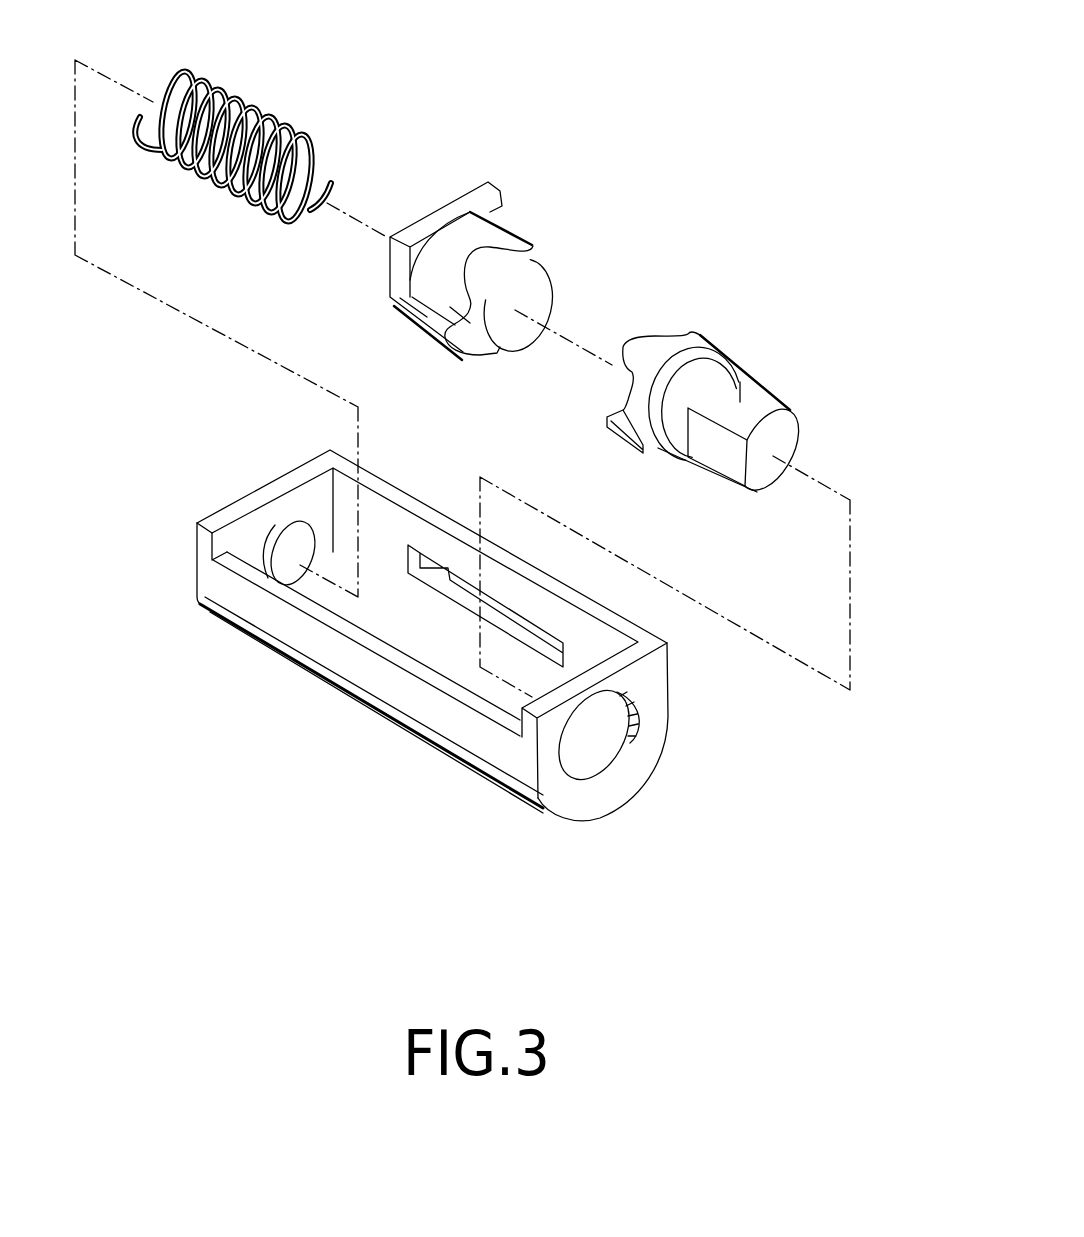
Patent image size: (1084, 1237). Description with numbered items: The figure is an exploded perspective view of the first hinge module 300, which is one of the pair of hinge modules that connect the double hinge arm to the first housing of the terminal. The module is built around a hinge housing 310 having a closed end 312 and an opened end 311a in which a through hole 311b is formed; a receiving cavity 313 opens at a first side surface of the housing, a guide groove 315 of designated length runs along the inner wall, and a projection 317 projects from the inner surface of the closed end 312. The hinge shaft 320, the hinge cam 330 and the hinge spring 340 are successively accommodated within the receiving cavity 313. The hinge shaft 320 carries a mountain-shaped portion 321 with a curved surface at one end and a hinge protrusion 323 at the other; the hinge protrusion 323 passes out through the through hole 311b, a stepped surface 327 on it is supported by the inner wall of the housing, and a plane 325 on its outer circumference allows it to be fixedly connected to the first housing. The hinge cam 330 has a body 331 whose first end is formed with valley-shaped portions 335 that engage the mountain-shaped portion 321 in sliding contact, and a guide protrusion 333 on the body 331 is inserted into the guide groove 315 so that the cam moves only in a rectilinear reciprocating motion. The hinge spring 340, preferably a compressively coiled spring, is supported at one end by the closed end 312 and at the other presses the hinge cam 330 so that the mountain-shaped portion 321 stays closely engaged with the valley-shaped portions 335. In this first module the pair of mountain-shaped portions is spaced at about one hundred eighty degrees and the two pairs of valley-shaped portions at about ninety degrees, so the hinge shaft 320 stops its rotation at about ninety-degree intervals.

The first hinge module 300 is at (898, 45).
The hinge housing 310 is at (423, 646).
The opened end 311a is at (570, 821).
The through hole 311b is at (627, 737).
The closed end 312 is at (248, 510).
The receiving cavity 313 is at (493, 693).
The guide groove 315 is at (437, 567).
The projection 317 is at (293, 575).
The hinge shaft 320 is at (769, 400).
The mountain-shaped portion 321 is at (641, 347).
The hinge protrusion 323 is at (748, 366).
The plane 325 is at (737, 473).
The stepped surface 327 is at (672, 460).
The hinge cam 330 is at (512, 264).
The body 331 is at (480, 197).
The guide protrusion 333 is at (540, 242).
The valley-shaped portion 335 is at (482, 356).
The hinge spring 340 is at (252, 98).